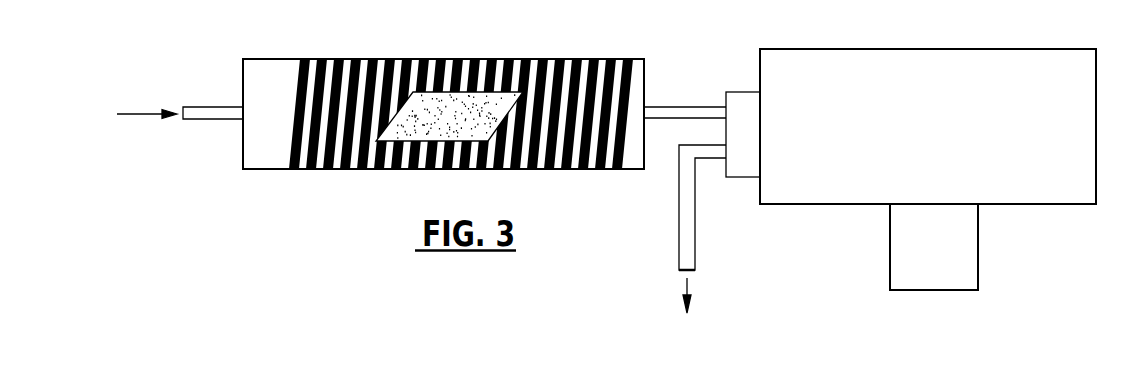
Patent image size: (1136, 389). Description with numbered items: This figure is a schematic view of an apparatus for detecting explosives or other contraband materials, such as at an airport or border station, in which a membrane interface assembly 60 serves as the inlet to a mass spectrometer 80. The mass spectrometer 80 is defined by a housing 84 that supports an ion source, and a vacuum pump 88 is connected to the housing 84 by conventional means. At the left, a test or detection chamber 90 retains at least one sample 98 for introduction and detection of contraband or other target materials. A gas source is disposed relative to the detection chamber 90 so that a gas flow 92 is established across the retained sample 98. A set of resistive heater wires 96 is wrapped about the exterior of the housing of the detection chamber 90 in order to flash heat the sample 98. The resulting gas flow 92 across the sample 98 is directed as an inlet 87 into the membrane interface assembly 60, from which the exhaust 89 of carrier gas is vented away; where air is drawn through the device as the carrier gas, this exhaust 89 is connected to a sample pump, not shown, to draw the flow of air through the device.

The detection chamber 90 is at (587, 58).
The resistive heater wires 96 is at (297, 82).
The sample 98 is at (448, 100).
The gas flow 92 is at (180, 92).
The inlet 87 is at (668, 107).
The membrane interface assembly 60 is at (740, 177).
The exhaust 89 is at (679, 240).
The mass spectrometer 80 is at (883, 49).
The housing 84 is at (1055, 205).
The vacuum pump 88 is at (979, 248).